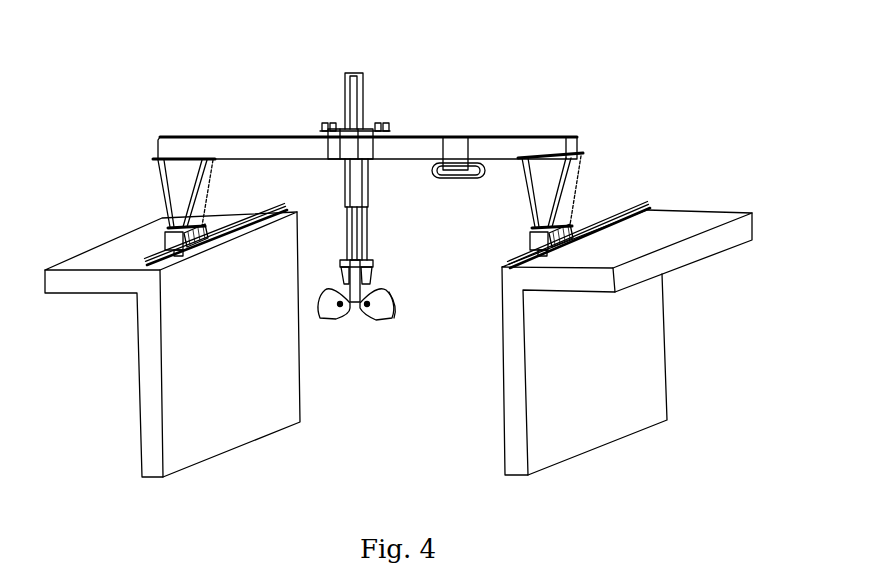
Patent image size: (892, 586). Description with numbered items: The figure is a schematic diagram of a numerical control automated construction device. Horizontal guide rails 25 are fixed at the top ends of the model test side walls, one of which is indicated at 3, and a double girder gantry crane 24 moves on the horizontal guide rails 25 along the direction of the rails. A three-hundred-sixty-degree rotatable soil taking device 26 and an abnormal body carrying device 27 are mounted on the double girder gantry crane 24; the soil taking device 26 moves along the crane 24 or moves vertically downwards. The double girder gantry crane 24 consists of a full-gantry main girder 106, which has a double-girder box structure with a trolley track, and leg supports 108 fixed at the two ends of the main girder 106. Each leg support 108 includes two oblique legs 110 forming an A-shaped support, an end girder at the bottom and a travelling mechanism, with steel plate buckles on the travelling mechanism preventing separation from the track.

The wall block 3 is at (172, 341).
The double girder gantry crane 24 is at (232, 150).
The horizontal guide rails 25 is at (632, 210).
The 360° rotatable soil taking device 26 is at (363, 240).
The abnormal body carrying device 27 is at (457, 152).
The full-gantry main girder 106 is at (349, 163).
The leg supports 108 is at (147, 190).
The oblique legs 110 is at (575, 183).